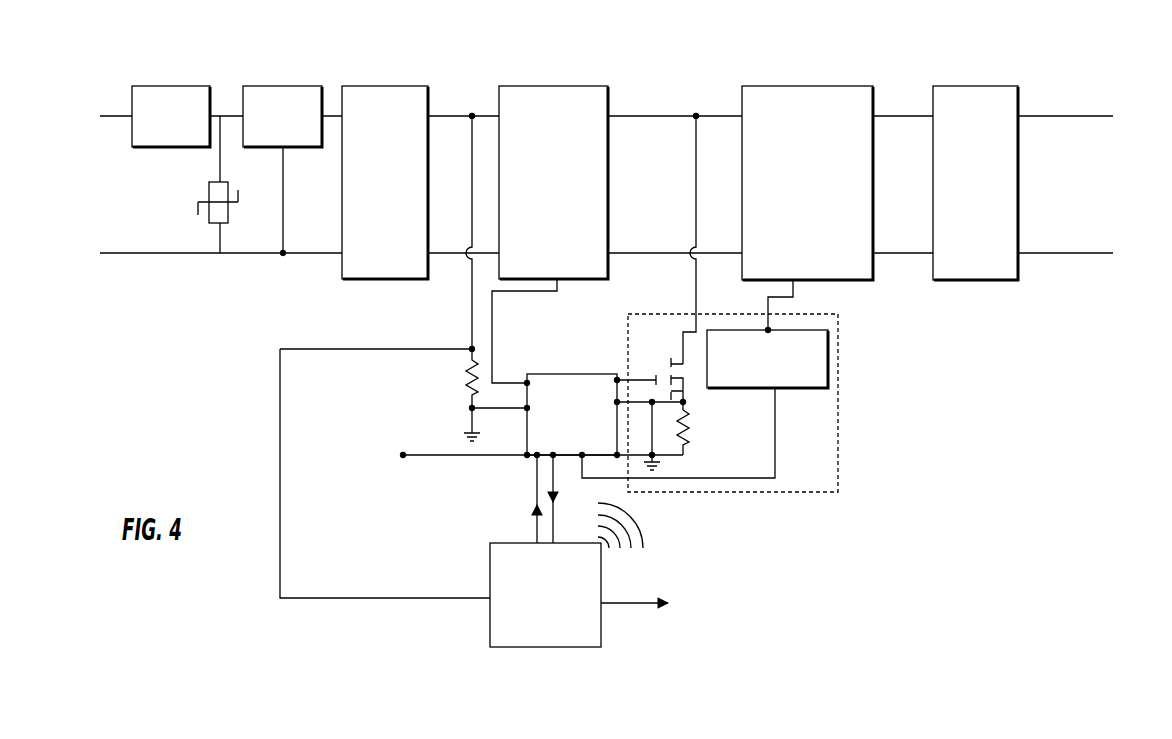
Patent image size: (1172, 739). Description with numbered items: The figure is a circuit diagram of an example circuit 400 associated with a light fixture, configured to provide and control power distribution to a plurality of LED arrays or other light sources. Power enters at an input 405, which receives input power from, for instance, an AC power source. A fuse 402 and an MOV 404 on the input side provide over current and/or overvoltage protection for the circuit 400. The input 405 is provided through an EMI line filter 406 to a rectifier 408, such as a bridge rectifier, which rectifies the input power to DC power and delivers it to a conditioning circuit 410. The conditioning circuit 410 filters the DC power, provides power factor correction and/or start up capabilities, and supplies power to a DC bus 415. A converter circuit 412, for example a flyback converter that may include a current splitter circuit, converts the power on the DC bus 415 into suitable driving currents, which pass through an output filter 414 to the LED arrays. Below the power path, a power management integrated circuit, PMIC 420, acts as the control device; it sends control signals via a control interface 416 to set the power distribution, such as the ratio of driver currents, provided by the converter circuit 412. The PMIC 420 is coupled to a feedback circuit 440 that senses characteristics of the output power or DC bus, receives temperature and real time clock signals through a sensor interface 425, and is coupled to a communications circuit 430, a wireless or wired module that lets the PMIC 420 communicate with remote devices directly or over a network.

The circuit 400 is at (884, 53).
The fuse 402 is at (172, 86).
The MOV 404 is at (206, 200).
The input 405 is at (136, 218).
The EMI line filter 406 is at (286, 86).
The rectifier 408 is at (388, 86).
The conditioning circuit 410 is at (556, 86).
The converter circuit 412 is at (790, 86).
The output filter 414 is at (980, 86).
The DC bus 415 is at (655, 113).
The control interface 416 is at (828, 360).
The power management integrated circuit (PMIC) 420 is at (572, 374).
The sensor interface 425 is at (433, 457).
The communications circuit 430 is at (545, 647).
The feedback circuit 440 is at (838, 432).